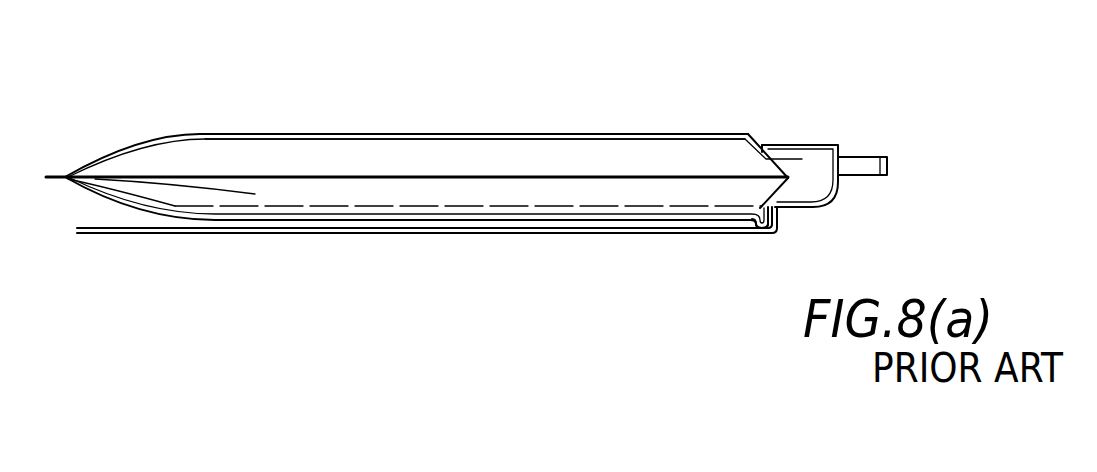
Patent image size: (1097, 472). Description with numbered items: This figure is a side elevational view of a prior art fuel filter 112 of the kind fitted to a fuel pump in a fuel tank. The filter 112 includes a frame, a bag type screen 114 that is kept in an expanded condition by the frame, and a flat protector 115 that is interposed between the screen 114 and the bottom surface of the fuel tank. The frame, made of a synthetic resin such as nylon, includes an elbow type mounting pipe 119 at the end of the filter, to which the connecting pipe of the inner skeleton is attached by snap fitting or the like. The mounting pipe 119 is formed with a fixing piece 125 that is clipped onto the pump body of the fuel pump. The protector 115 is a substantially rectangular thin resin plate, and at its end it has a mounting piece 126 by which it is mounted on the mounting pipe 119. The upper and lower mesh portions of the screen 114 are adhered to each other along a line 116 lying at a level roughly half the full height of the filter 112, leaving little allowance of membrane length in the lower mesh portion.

The filter 112 is at (188, 122).
The bag type screen 114 is at (396, 152).
The flat protector 115 is at (492, 236).
The line 116 is at (272, 176).
The elbow type mounting pipe 119 is at (812, 162).
The fixing piece 125 is at (868, 157).
The mounting piece 126 is at (774, 226).